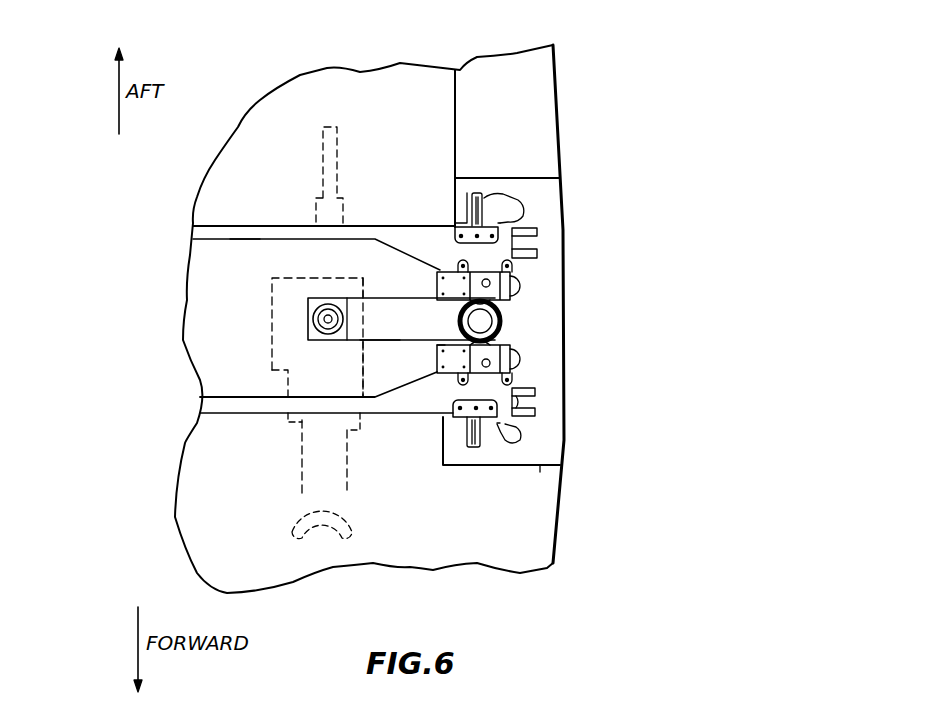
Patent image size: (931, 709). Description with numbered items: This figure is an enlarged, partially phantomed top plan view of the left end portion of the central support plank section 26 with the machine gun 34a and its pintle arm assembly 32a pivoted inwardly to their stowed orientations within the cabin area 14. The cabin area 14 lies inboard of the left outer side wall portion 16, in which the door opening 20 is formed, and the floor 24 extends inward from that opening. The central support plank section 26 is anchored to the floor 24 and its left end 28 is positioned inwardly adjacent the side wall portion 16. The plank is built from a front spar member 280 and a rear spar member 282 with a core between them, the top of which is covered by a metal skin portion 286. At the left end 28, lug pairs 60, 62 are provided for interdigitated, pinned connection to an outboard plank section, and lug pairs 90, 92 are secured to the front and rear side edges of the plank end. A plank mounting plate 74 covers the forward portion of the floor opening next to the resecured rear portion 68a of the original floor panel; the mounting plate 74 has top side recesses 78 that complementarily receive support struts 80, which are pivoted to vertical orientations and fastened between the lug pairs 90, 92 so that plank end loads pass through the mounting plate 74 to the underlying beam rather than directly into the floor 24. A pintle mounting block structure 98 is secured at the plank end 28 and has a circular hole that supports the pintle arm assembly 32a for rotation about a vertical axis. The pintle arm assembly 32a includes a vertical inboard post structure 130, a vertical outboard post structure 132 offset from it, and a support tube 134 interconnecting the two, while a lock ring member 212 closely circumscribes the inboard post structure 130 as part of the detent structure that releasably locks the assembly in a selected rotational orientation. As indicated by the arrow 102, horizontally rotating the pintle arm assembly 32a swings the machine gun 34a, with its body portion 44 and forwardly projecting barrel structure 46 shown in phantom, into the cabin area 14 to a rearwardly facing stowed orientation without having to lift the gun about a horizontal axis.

The cabin area 14 is at (292, 113).
The rear portion of floor panel 68a is at (535, 88).
The left outer side wall portion 16 is at (560, 483).
The door opening 20 is at (553, 215).
The plank mounting plate 74 is at (543, 466).
The rear spar member 282 is at (283, 224).
The left end of central plank section 28 is at (421, 223).
The metal skin portion 286 is at (266, 268).
The front spar member 280 is at (227, 407).
The central support plank section 26 is at (250, 415).
The floor 24 is at (461, 553).
The barrel structure 46 is at (338, 148).
The machine gun 34a is at (272, 328).
The body portion 44 is at (272, 360).
The support tube 134 is at (437, 332).
The outboard post structure 132 is at (308, 316).
The pintle arm assembly 32a is at (380, 343).
The pintle mounting block structure 98 is at (440, 354).
The inboard post structure 130 is at (511, 322).
The arrow 102 is at (411, 286).
The lock ring member 212 is at (466, 350).
The lug pair 90 is at (462, 205).
The support strut 80 is at (478, 203).
The lug pair 92 is at (491, 200).
The top side recess 78 is at (525, 207).
The lug pair 62 is at (538, 232).
The lug pair 60 is at (538, 256).